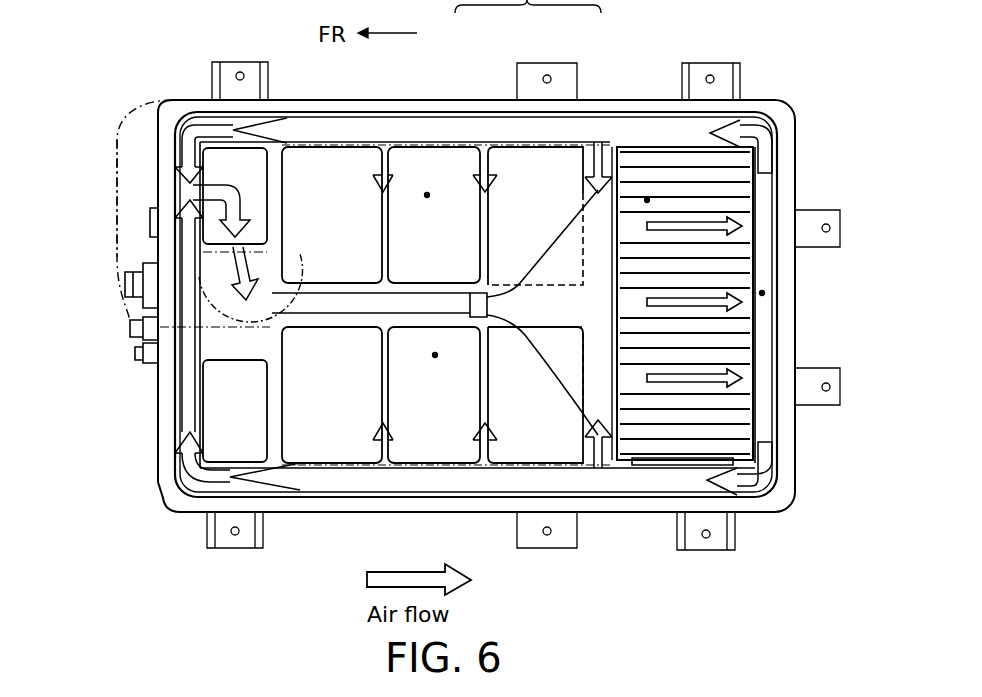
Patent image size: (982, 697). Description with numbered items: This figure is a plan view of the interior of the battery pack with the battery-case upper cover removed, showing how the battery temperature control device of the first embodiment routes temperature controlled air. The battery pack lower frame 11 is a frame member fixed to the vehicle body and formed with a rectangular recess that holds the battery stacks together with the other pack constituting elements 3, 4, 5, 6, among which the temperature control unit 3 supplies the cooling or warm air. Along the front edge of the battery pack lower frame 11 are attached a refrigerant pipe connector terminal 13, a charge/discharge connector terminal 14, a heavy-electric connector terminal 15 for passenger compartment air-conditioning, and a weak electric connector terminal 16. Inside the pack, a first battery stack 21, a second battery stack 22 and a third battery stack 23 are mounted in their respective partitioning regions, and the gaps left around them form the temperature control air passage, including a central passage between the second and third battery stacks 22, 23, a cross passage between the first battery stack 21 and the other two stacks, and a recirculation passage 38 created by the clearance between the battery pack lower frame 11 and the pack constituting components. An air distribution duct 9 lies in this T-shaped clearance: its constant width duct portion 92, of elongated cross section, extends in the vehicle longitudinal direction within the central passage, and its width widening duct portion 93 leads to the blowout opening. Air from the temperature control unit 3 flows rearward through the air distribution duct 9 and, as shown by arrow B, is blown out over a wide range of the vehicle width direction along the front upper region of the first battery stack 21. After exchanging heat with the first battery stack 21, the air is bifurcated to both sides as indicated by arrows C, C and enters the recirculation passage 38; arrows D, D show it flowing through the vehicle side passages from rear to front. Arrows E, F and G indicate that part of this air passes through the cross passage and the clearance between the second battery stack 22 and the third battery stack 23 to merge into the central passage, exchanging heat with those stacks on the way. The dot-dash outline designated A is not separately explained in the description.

The temperature control unit 3 is at (260, 193).
The pack constituting element 4 is at (249, 340).
The pack constituting element 5 is at (227, 413).
The pack constituting element 6 is at (655, 468).
The air distribution duct 9 is at (551, 247).
The battery pack lower frame 11 is at (617, 100).
The refrigerant pipe connector terminal 13 is at (150, 222).
The charge/discharge connector terminal 14 is at (126, 284).
The heavy-electric connector terminal 15 is at (130, 330).
The weak electric connector terminal 16 is at (135, 357).
The first battery stack 21 is at (647, 200).
The second battery stack 22 is at (427, 195).
The third battery stack 23 is at (435, 355).
The recirculation passage 38 is at (762, 293).
The constant width duct portion 92 is at (413, 295).
The width widening duct portion 93 is at (538, 262).
The housing region A is at (118, 136).
The arrow B is at (708, 383).
The arrows C is at (760, 137).
The arrows D is at (392, 128).
The arrow E is at (588, 165).
The arrow F is at (484, 160).
The arrow G is at (393, 165).